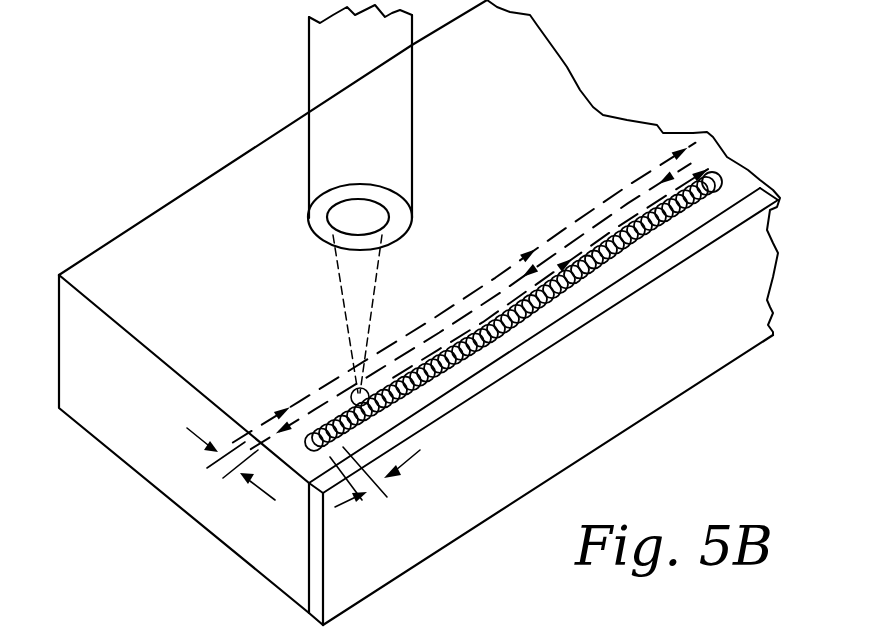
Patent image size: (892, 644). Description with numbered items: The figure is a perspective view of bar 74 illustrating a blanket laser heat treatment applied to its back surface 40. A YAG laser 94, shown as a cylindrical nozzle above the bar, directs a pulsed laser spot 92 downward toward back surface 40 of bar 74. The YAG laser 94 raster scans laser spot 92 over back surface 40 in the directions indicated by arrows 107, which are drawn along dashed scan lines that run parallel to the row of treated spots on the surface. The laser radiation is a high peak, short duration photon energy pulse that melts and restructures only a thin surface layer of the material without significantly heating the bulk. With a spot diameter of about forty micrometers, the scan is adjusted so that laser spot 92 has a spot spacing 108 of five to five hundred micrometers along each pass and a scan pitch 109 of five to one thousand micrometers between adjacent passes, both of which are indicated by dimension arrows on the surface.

The back surface 40 is at (125, 231).
The bar 74 is at (248, 140).
The YAG laser 94 is at (413, 103).
The laser spot 92 is at (340, 313).
The arrows 107 is at (522, 256).
The spot spacing 108 is at (420, 450).
The scan pitch 109 is at (187, 428).